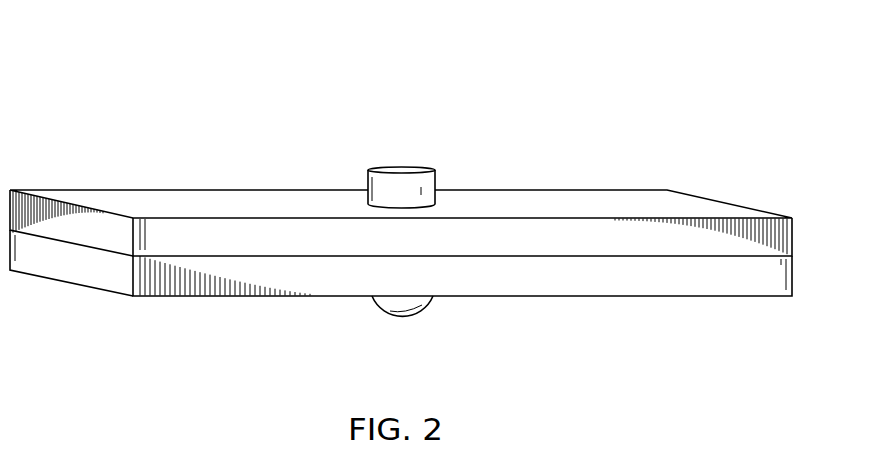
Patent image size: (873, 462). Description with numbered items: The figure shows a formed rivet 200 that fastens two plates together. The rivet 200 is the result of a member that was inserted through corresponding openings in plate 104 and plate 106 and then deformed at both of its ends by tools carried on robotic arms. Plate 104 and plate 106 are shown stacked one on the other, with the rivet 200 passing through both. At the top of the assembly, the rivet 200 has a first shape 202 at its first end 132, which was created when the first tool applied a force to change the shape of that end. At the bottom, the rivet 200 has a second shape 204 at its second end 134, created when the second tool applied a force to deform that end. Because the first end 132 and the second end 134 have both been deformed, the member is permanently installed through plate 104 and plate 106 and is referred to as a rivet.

The rivet 200 is at (329, 74).
The first shape 202 is at (383, 163).
The second shape 204 is at (383, 322).
The plate 104 is at (134, 198).
The plate 106 is at (70, 283).
The first end 132 is at (417, 136).
The second end 134 is at (402, 318).